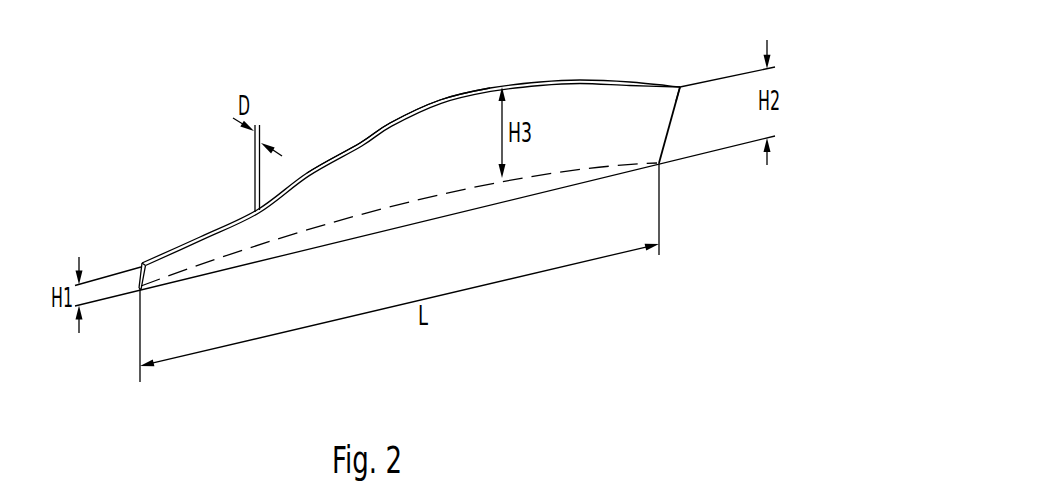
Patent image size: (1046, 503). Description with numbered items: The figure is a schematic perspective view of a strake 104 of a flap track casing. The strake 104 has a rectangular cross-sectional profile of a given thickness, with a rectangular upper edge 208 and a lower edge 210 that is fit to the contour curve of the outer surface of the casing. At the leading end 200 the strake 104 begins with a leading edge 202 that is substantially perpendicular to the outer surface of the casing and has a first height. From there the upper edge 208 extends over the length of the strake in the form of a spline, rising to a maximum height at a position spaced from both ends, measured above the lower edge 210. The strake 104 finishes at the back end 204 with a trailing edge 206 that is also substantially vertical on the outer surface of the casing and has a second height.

The strake 104 is at (598, 95).
The leading end 200 is at (145, 240).
The leading edge 202 is at (137, 284).
The back end 204 is at (670, 62).
The trailing edge 206 is at (682, 114).
The upper edge 208 is at (418, 102).
The lower edge 210 is at (430, 215).